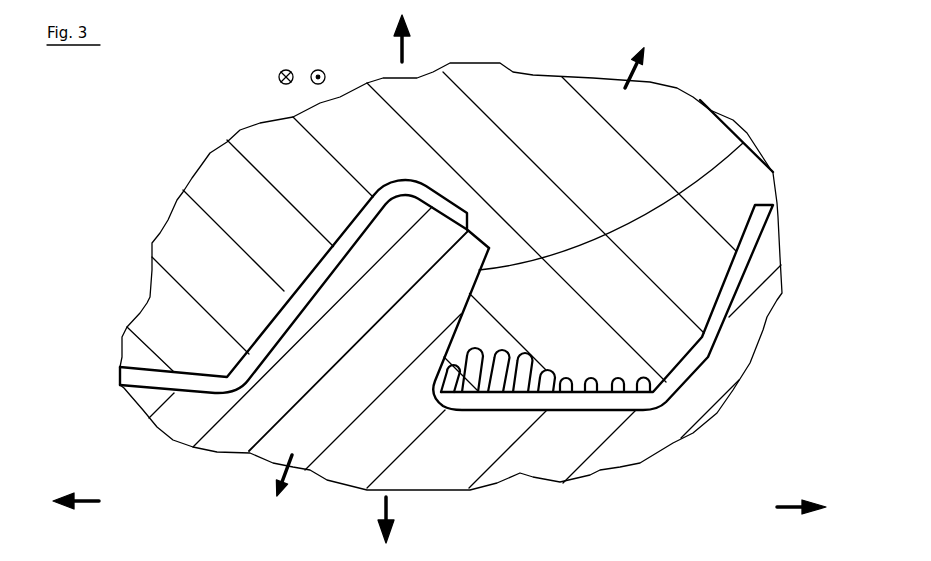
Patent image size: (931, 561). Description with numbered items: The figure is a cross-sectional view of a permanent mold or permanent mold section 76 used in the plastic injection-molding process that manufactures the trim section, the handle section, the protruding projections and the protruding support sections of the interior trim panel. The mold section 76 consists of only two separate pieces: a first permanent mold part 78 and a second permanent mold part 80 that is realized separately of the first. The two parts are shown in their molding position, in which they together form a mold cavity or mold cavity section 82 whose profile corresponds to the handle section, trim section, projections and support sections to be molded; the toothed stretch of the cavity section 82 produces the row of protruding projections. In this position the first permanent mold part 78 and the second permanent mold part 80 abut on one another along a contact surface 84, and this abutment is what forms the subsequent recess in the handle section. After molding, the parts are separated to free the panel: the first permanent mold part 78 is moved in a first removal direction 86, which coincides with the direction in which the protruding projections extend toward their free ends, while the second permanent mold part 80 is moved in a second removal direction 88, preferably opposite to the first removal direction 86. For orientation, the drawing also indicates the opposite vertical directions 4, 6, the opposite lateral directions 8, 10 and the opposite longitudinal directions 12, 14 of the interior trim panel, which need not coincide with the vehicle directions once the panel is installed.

The vertical direction 4 is at (80, 505).
The vertical direction 6 is at (788, 503).
The lateral direction 8 is at (280, 73).
The lateral direction 10 is at (325, 70).
The longitudinal direction 12 is at (384, 508).
The longitudinal direction 14 is at (404, 46).
The permanent mold section 76 is at (696, 94).
The first permanent mold part 78 is at (542, 125).
The second permanent mold part 80 is at (620, 443).
The mold cavity section 82 is at (210, 385).
The contact surface 84 is at (743, 143).
The first removal direction 86 is at (628, 72).
The second removal direction 88 is at (283, 474).